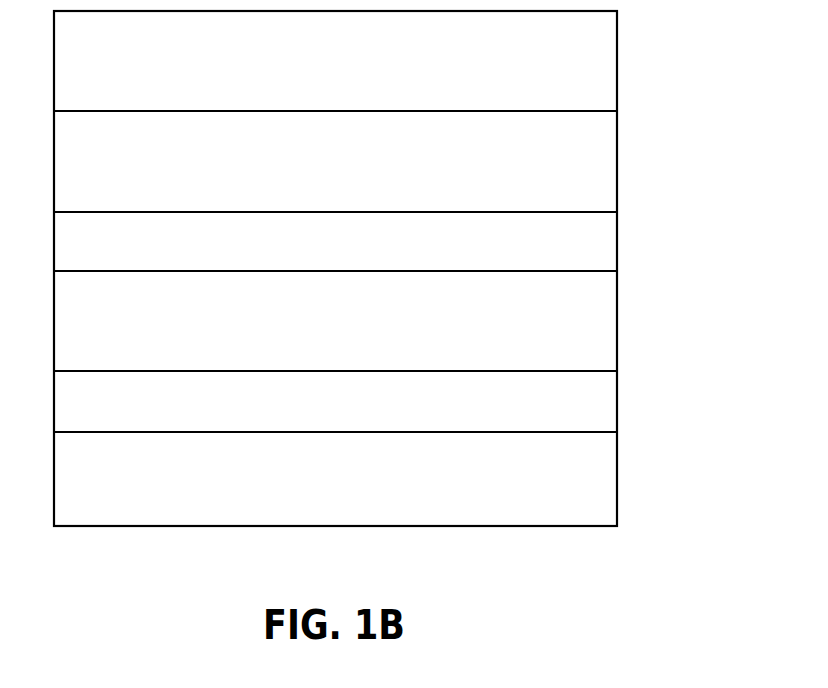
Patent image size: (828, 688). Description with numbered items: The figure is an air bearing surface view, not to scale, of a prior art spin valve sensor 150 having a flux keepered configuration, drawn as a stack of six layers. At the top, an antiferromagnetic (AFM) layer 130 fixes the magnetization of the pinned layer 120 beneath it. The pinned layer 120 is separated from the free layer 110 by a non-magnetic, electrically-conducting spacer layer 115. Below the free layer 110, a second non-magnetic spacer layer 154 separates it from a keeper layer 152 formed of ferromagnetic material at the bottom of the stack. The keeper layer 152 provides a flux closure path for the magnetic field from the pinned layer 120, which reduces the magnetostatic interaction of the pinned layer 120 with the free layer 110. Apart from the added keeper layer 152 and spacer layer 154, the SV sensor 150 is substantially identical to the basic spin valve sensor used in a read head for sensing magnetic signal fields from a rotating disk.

The SV sensor 150 is at (585, 574).
The antiferromagnetic (AFM) layer 130 is at (589, 97).
The pinned layer 120 is at (589, 179).
The spacer layer 115 is at (591, 252).
The free layer 110 is at (592, 340).
The spacer layer 154 is at (592, 408).
The keeper layer 152 is at (592, 503).